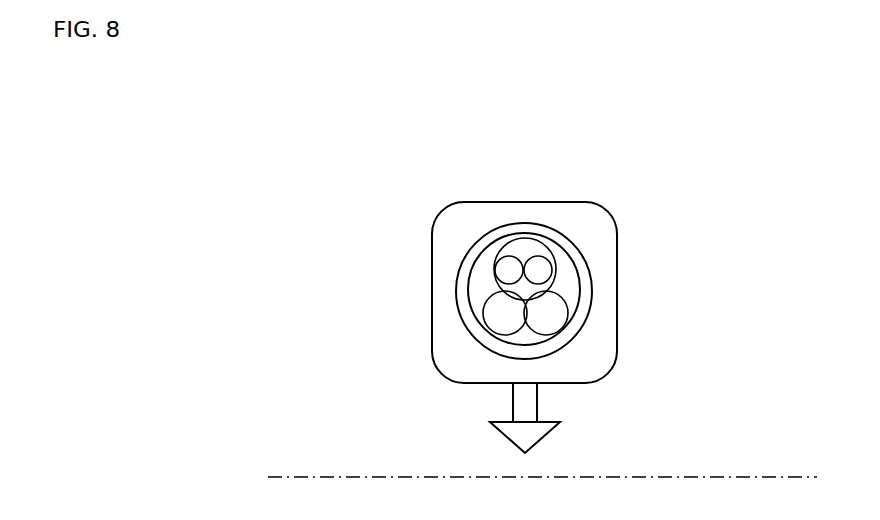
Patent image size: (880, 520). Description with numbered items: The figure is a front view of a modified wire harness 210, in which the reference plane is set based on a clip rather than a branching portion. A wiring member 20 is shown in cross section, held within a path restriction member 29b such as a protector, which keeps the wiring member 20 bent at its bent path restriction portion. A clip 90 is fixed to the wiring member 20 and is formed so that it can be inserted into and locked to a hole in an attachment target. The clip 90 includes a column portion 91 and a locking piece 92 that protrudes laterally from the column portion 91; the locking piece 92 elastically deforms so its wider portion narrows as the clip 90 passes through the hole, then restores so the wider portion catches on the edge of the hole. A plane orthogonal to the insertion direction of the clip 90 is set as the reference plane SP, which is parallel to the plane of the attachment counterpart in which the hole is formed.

The wire harness 210 is at (533, 255).
The path restriction member 29b is at (608, 258).
The wiring member 20 is at (587, 328).
The clip 90 is at (567, 424).
The column portion 91 is at (530, 402).
The locking piece 92 is at (535, 435).
The reference plane SP is at (748, 477).